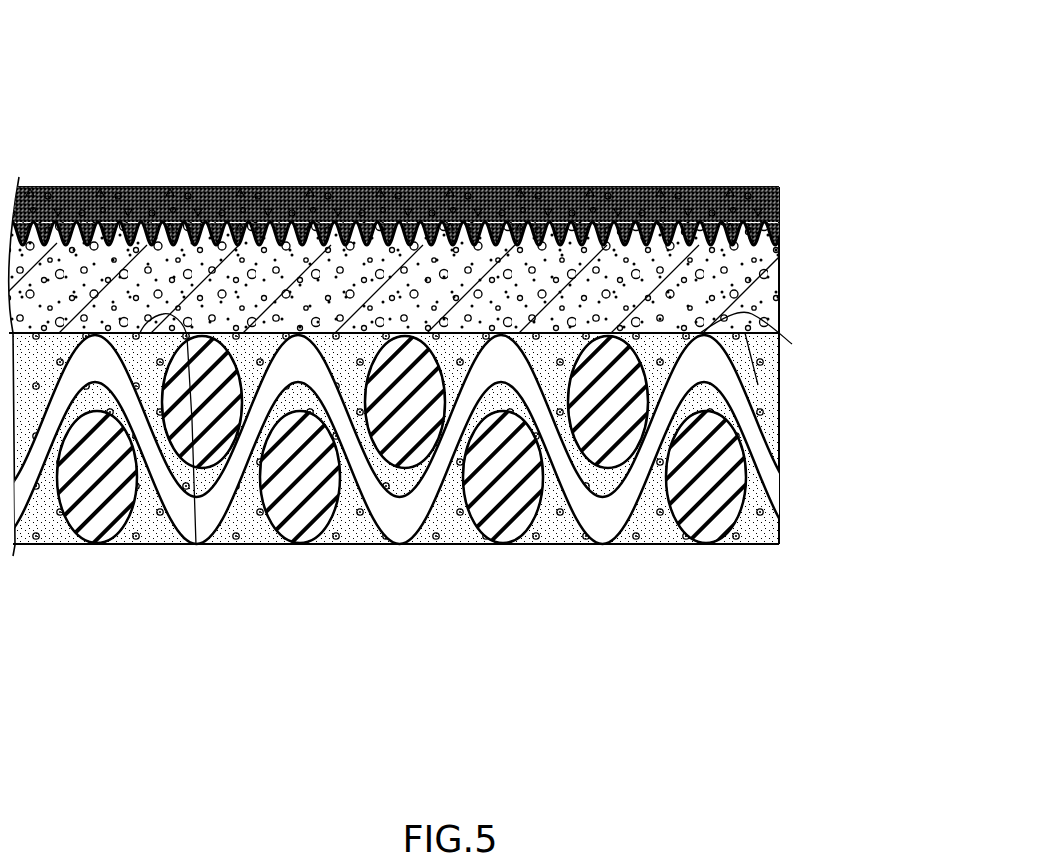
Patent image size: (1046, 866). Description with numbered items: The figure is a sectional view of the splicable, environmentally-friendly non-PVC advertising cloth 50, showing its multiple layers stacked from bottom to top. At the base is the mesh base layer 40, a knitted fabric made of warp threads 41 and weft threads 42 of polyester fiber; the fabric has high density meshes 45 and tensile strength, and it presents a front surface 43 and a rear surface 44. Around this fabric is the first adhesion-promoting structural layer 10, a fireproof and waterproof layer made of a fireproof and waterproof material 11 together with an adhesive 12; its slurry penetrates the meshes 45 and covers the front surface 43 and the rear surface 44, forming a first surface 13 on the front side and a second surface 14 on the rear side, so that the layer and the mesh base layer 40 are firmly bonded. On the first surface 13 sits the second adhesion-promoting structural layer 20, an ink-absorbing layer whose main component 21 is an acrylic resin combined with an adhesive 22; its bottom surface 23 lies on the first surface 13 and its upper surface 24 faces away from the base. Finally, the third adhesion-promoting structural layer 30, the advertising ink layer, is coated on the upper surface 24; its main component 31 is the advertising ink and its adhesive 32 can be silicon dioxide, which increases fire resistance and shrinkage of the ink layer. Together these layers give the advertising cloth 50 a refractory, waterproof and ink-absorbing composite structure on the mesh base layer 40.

The advertising cloth 50 is at (65, 45).
The third adhesion-promoting structural layer 30 is at (462, 194).
The advertising ink 31 is at (779, 200).
The adhesive 32 is at (733, 197).
The second adhesion-promoting structural layer 20 is at (462, 299).
The acrylic resin main component 21 is at (752, 307).
The adhesive 22 is at (748, 269).
The bottom surface 23 is at (782, 348).
The upper surface 24 is at (438, 239).
The first adhesion-promoting structural layer 10 is at (462, 501).
The fireproof and waterproof material 11 is at (779, 513).
The adhesive 12 is at (773, 418).
The first surface 13 is at (779, 381).
The second surface 14 is at (438, 550).
The mesh base layer 40 is at (453, 501).
The warp threads 41 is at (402, 520).
The weft threads 42 is at (296, 507).
The front surface 43 is at (196, 545).
The rear surface 44 is at (128, 545).
The meshes 45 is at (605, 589).